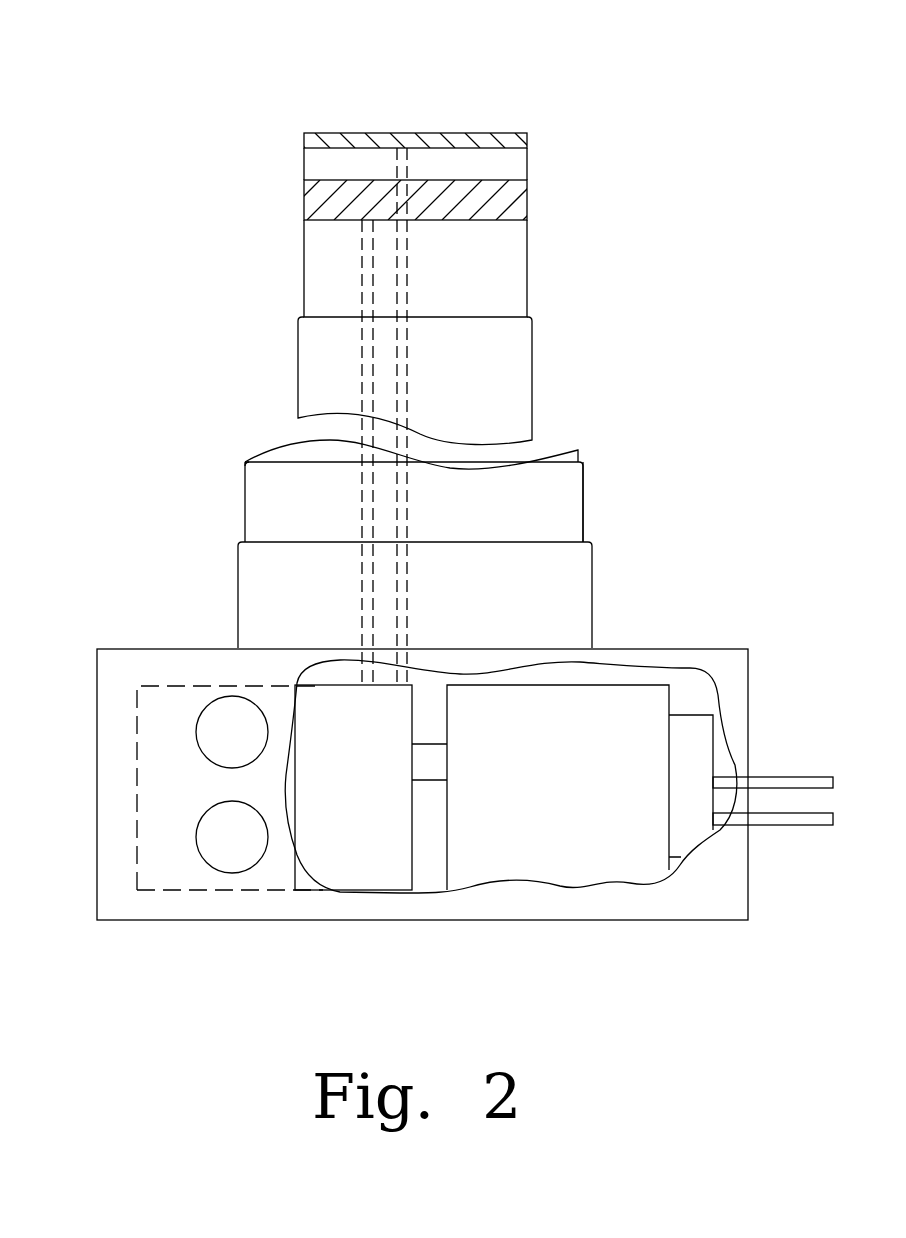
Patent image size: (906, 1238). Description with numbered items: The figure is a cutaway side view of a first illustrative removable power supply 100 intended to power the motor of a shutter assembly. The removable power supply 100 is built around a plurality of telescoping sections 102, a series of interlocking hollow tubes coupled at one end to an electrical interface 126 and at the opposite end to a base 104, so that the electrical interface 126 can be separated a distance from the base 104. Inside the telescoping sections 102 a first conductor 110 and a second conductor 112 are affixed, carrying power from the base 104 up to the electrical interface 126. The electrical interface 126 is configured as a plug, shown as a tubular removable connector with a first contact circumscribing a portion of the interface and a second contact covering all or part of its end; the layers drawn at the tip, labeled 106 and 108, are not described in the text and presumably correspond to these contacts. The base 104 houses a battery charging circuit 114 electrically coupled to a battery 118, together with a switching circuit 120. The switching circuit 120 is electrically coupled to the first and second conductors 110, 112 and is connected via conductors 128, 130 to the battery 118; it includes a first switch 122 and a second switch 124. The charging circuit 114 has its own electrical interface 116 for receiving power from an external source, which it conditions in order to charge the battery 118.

The removable power supply 100 is at (740, 112).
The telescoping sections 102 is at (514, 345).
The base 104 is at (166, 655).
The cover glass 106 is at (528, 139).
The filter 108 is at (528, 204).
The first conductor 110 is at (403, 398).
The second conductor 112 is at (363, 358).
The battery charging circuit 114 is at (702, 745).
The electrical interface 116 is at (822, 820).
The battery 118 is at (622, 697).
The switching circuit 120 is at (382, 872).
The first switch 122 is at (205, 732).
The second switch 124 is at (205, 837).
The electrical interface 126 is at (268, 167).
The conductor 128 is at (430, 740).
The conductor 130 is at (430, 778).